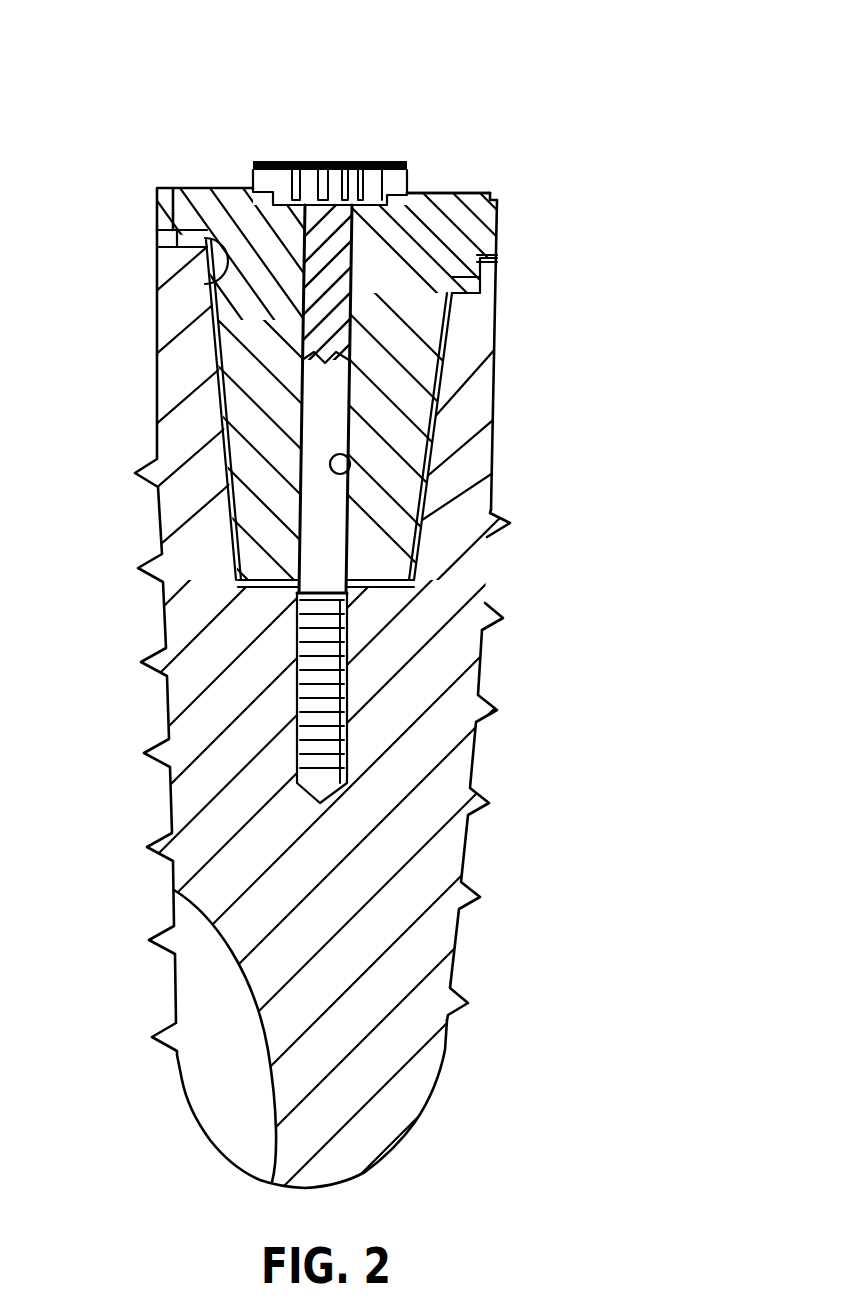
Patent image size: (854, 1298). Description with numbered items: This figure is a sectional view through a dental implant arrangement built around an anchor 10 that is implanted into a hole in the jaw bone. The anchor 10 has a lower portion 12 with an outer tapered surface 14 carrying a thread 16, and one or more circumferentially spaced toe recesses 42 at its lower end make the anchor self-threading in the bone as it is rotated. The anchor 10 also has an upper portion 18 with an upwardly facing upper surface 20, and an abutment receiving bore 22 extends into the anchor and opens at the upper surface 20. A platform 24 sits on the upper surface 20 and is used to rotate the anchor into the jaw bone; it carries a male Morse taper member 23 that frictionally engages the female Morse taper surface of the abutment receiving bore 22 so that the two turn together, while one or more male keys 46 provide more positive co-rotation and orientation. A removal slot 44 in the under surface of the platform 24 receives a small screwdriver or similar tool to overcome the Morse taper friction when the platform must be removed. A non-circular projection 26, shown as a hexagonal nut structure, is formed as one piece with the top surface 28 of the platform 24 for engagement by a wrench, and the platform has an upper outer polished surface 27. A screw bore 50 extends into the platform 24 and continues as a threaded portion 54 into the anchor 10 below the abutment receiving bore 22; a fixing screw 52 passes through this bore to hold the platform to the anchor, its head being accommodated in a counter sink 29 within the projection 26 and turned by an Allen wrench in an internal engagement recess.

The anchor 10 is at (563, 524).
The lower portion 12 is at (466, 857).
The outer tapered surface 14 is at (480, 666).
The thread 16 is at (502, 618).
The upper portion 18 is at (504, 310).
The upper surface 20 is at (168, 188).
The abutment receiving bore 22 is at (418, 408).
The male Morse taper member 23 is at (245, 388).
The platform 24 is at (498, 180).
The non-circular projection 26 is at (424, 192).
The upper outer polished surface 27 is at (503, 220).
The top surface 28 is at (227, 167).
The counter sink 29 is at (378, 165).
The toe recess 42 is at (250, 1054).
The removal slot 44 is at (210, 287).
The male key 46 is at (485, 274).
The screw bore 50 is at (350, 481).
The fixing screw 52 is at (322, 528).
The threaded portion 54 is at (300, 722).